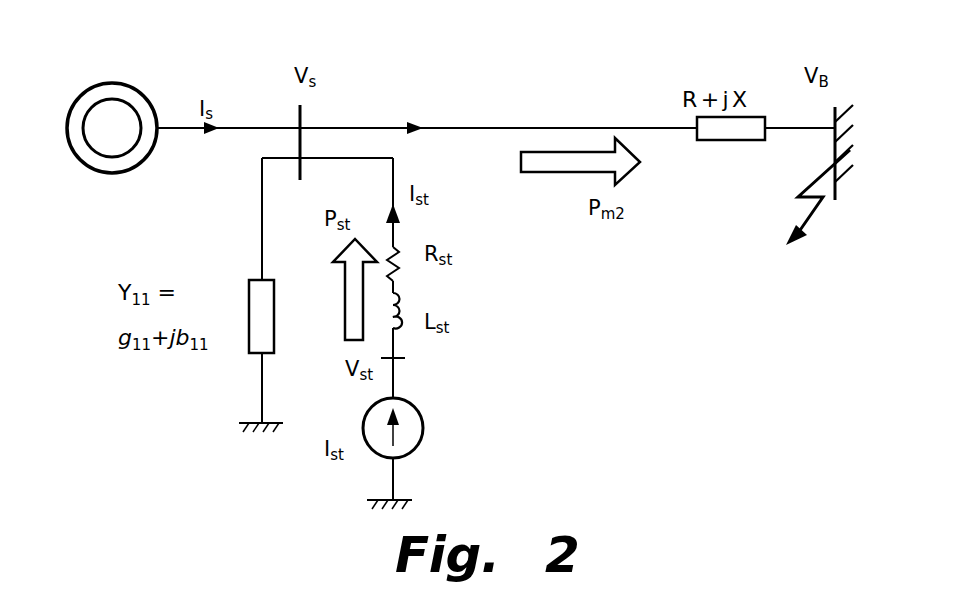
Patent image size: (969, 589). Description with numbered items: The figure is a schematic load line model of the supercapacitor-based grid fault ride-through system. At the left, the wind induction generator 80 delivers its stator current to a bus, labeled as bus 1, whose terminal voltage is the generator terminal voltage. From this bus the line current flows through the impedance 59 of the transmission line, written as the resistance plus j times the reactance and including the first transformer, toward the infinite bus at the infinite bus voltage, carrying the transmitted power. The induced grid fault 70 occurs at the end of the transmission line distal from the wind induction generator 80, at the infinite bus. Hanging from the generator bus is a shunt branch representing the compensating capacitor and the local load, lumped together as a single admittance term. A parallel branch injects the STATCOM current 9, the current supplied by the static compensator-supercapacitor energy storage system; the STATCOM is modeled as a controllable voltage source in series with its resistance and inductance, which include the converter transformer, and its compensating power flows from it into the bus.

The wind induction generator 80 is at (150, 99).
The bus 1 is at (288, 139).
The impedance 59 is at (555, 128).
The induced grid fault 70 is at (826, 208).
The STATCOM current 9 is at (409, 401).